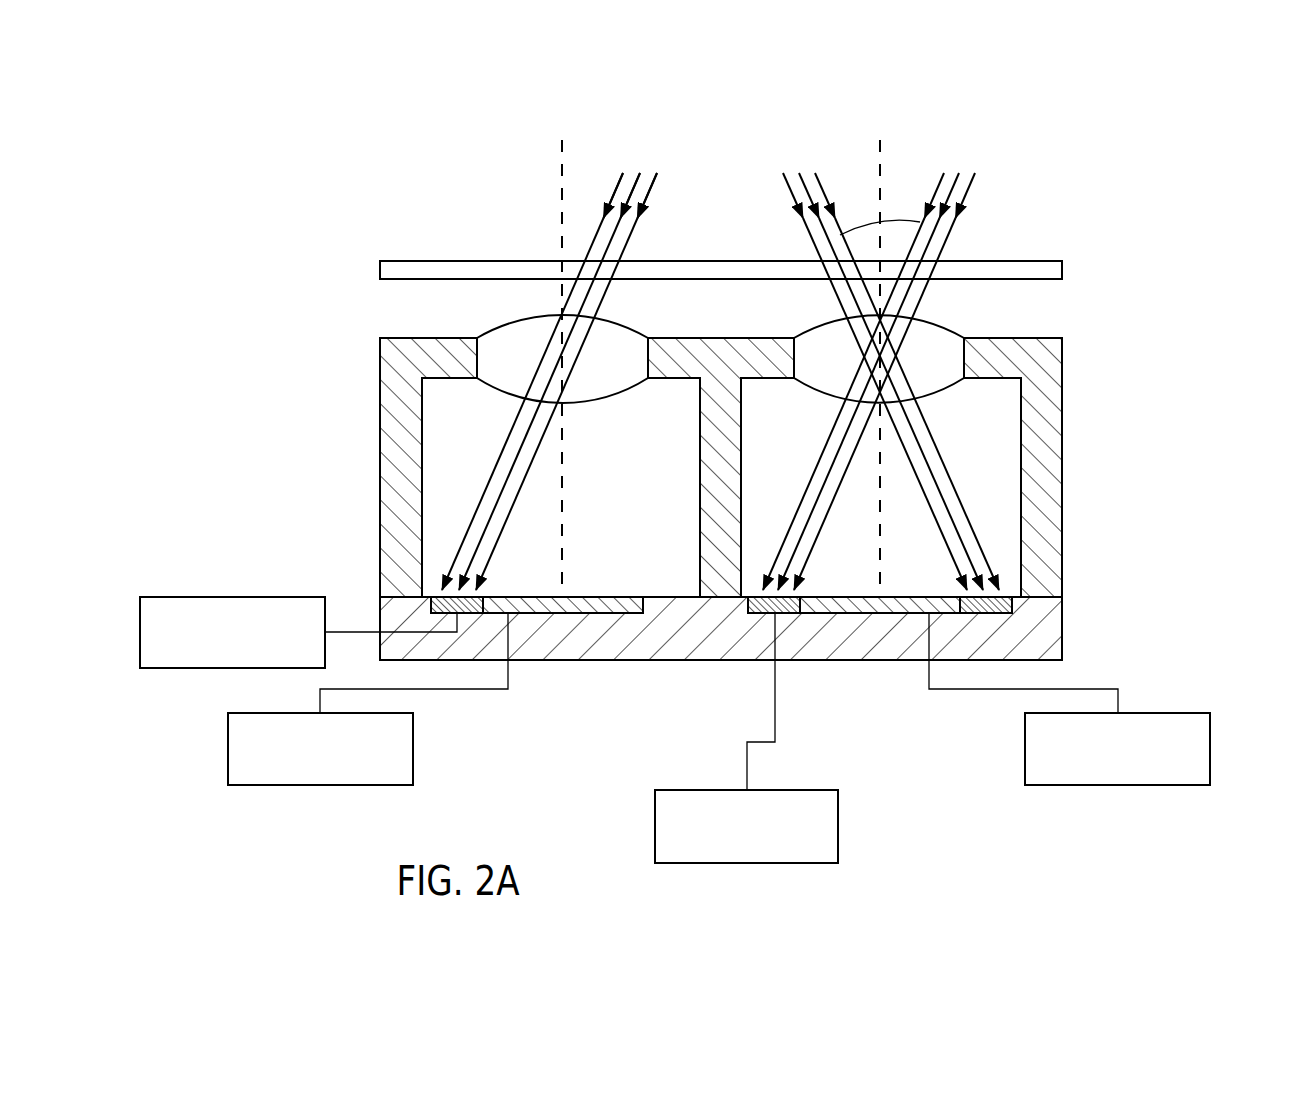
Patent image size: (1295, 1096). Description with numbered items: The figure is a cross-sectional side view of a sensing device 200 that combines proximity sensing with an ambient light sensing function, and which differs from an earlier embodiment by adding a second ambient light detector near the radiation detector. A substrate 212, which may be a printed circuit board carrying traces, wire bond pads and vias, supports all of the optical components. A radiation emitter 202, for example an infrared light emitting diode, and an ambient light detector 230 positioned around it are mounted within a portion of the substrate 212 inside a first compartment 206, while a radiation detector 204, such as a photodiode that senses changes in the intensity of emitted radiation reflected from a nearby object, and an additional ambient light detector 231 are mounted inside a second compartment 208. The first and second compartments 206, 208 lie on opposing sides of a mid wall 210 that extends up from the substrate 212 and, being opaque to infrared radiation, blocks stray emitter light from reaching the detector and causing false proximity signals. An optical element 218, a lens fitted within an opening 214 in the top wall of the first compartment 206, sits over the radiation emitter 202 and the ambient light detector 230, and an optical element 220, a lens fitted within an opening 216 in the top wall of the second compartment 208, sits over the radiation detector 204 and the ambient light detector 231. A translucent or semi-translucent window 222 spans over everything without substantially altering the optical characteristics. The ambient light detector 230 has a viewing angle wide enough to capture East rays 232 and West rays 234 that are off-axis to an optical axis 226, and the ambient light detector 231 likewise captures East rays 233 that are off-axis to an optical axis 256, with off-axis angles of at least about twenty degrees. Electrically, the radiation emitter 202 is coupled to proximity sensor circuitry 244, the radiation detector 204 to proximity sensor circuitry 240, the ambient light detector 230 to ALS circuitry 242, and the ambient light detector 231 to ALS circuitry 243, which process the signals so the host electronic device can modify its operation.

The sensing device 200 is at (1182, 210).
The radiation emitter 202 is at (877, 613).
The radiation detector 204 is at (567, 613).
The first compartment 206 is at (1065, 512).
The second compartment 208 is at (378, 472).
The mid wall 210 is at (700, 467).
The substrate 212 is at (1062, 630).
The opening 214 is at (952, 400).
The opening 216 is at (493, 397).
The optical element 218 is at (945, 322).
The optical element 220 is at (500, 323).
The window 222 is at (1007, 261).
The optical axis 226 is at (880, 148).
The ambient light detector 230 is at (762, 613).
The ambient light detector 231 is at (442, 596).
The East rays 232 is at (985, 180).
The East rays 233 is at (657, 183).
The West rays 234 is at (787, 193).
The proximity sensor circuitry 240 is at (228, 743).
The ALS circuitry 242 is at (655, 835).
The ALS circuitry 243 is at (203, 597).
The proximity sensor circuitry 244 is at (1210, 743).
The optical axis 256 is at (562, 148).